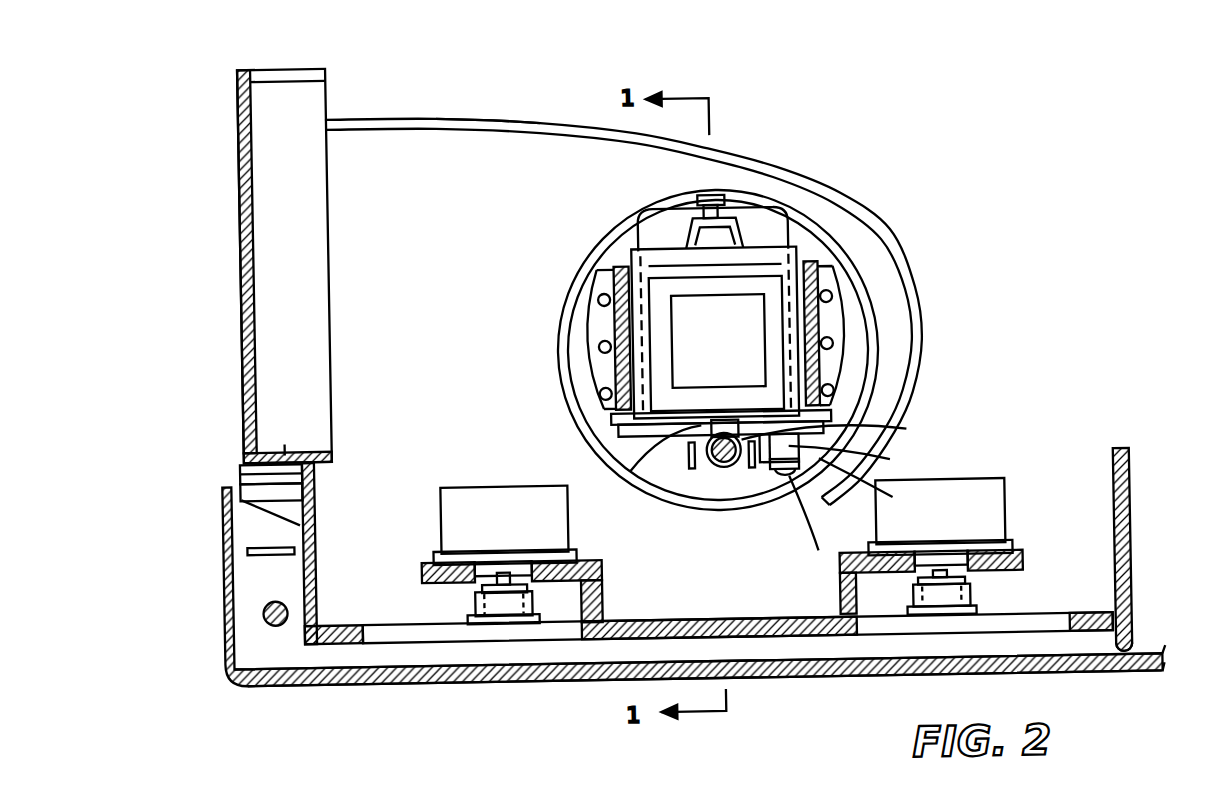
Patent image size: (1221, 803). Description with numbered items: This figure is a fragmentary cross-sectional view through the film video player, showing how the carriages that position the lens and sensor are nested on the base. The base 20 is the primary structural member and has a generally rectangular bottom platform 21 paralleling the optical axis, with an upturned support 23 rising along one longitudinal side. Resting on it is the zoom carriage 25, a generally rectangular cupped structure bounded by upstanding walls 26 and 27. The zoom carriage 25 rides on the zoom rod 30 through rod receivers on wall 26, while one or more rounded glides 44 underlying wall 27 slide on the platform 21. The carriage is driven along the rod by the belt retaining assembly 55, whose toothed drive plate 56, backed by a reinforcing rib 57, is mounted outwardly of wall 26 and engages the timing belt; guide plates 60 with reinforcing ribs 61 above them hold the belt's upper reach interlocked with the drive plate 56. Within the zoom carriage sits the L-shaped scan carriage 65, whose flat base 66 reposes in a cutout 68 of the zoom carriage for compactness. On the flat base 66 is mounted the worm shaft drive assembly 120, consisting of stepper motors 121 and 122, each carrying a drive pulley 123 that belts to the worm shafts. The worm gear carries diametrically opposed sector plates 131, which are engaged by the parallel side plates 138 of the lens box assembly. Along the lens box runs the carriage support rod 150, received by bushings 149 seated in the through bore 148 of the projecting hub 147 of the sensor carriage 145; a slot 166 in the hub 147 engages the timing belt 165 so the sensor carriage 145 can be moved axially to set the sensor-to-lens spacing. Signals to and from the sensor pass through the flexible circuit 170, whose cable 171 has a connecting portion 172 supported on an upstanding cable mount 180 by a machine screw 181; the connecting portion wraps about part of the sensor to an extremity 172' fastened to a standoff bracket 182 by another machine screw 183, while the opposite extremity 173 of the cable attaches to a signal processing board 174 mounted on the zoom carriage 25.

The base 20 is at (455, 690).
The bottom platform 21 is at (553, 678).
The upturned support 23 is at (224, 585).
The zoom carriage 25 is at (1135, 604).
The upstanding wall 26 is at (314, 560).
The upstanding wall 27 is at (1122, 528).
The zoom rod 30 is at (262, 616).
The rounded glides 44 is at (1128, 648).
The belt retaining assembly 55 is at (250, 462).
The drive plate 56 is at (250, 484).
The reinforcing rib 57 is at (270, 505).
The guide plates 60 is at (225, 448).
The reinforcing ribs 61 is at (284, 447).
The scan carriage 65 is at (812, 637).
The flat base 66 is at (680, 628).
The cutout 68 is at (1065, 625).
The worm shaft drive assembly 120 is at (990, 446).
The stepper motor 121 is at (970, 488).
The stepper motor 122 is at (467, 498).
The drive pulley 123 is at (488, 600).
The sector plates 131 is at (592, 368).
The side plates 138 is at (622, 325).
The sensor carriage 145 is at (800, 248).
The projecting hub 147 is at (628, 470).
The through bore 148 is at (715, 438).
The bushings 149 is at (844, 433).
The carriage support rod 150 is at (718, 462).
The timing belt 165 is at (686, 466).
The slot 166 is at (797, 460).
The flexible circuit 170 is at (843, 190).
The cable 171 is at (880, 238).
The connecting portion 172 is at (676, 212).
The extremity 172' is at (884, 486).
The opposite extremity 173 is at (378, 118).
The signal processing board 174 is at (320, 224).
The cable mount 180 is at (688, 237).
The machine screw 181 is at (710, 195).
The standoff bracket 182 is at (862, 461).
The machine screw 183 is at (816, 526).